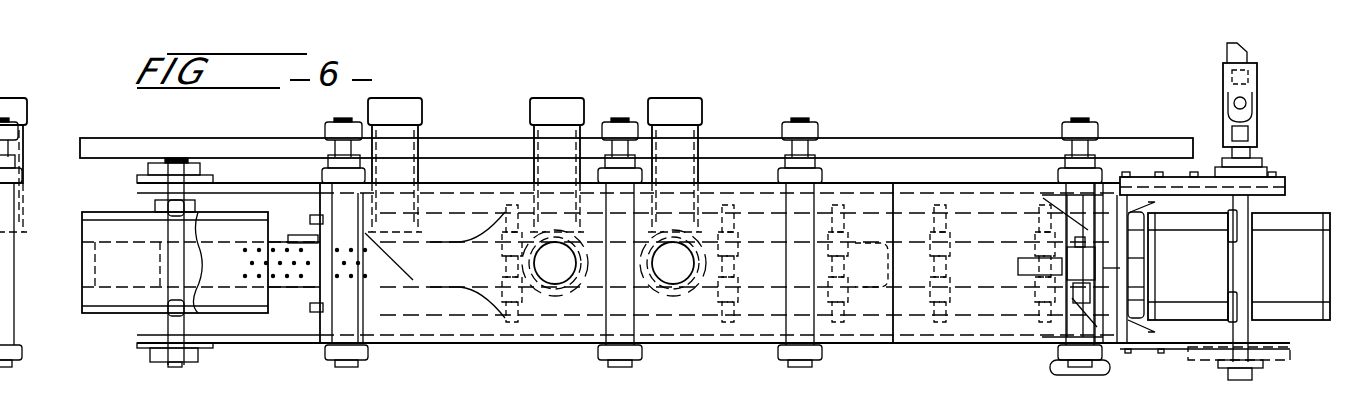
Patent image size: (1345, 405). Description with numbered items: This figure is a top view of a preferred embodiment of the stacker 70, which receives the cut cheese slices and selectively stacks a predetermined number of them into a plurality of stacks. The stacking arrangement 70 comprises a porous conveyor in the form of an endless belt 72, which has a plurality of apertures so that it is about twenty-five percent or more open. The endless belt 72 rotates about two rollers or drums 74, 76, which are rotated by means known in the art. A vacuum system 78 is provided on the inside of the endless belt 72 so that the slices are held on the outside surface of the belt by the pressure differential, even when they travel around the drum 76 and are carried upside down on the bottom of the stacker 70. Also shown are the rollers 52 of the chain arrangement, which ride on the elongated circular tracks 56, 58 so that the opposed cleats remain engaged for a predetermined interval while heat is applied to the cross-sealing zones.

The stacker 70 is at (846, 125).
The endless belt 72 is at (228, 275).
The roller or drum 74 is at (1310, 322).
The roller or drum 76 is at (100, 313).
The vacuum system 78 is at (400, 98).
The rollers 52 is at (145, 348).
The elongated circular track 56 is at (262, 345).
The elongated circular track 58 is at (345, 355).